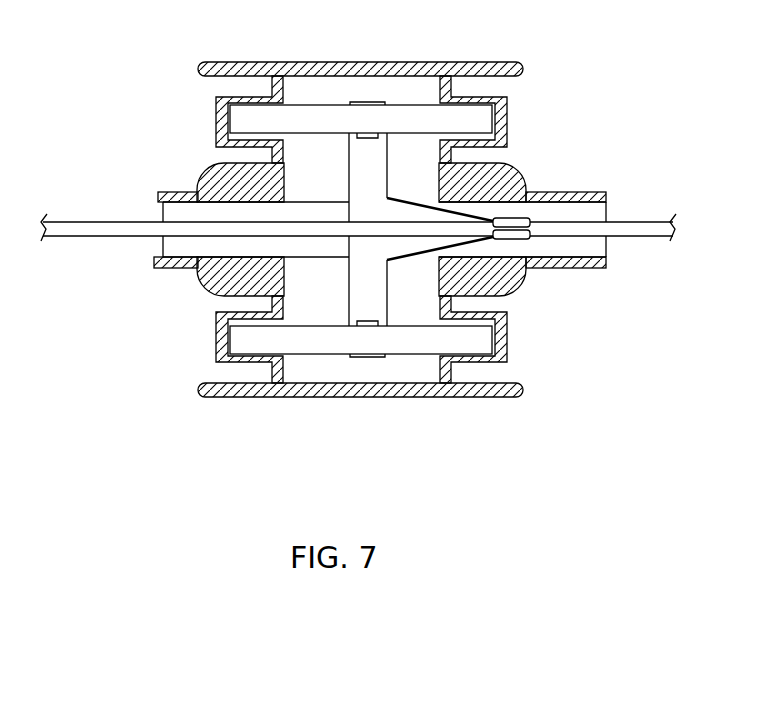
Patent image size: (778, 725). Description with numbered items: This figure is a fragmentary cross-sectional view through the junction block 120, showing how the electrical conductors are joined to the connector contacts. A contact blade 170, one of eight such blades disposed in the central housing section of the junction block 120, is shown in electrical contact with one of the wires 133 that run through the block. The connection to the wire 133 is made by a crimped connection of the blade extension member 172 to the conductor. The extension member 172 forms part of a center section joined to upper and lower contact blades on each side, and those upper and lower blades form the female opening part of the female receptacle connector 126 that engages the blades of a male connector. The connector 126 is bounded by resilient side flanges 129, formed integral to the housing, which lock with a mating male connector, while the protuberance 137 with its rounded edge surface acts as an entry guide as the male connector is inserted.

The junction block 120 is at (158, 193).
The female receptacle connector 126 is at (365, 397).
The side flange 129 is at (218, 62).
The wire 133 is at (640, 228).
The protuberance 137 is at (220, 178).
The contact blade 170 is at (328, 113).
The blade extension member 172 is at (524, 219).